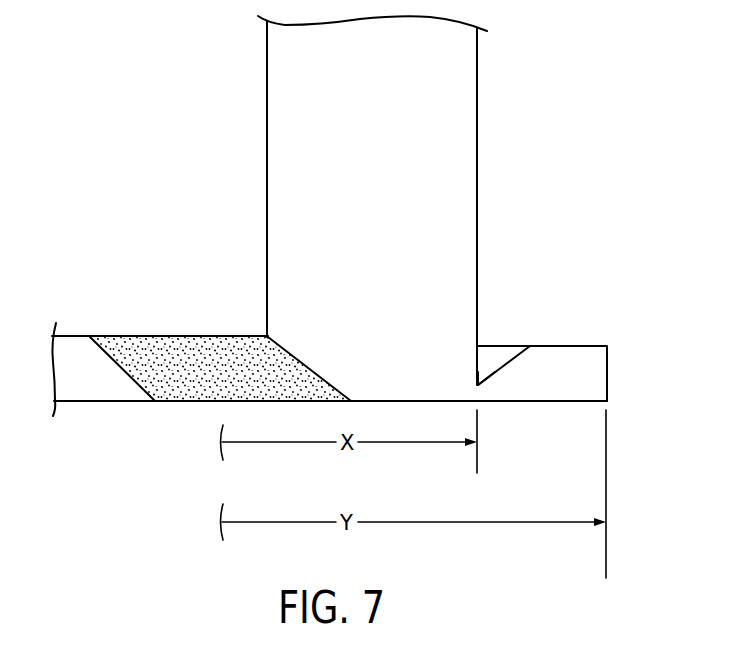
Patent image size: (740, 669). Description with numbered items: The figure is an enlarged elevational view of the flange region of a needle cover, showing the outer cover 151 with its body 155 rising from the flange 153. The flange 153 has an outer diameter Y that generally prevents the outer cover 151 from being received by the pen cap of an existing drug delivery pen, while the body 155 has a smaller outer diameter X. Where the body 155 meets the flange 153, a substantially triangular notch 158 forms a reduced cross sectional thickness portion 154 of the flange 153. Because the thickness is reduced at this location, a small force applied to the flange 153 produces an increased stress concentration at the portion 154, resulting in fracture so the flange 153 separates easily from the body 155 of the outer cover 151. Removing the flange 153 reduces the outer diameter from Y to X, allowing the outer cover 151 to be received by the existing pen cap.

The outer cover 151 is at (490, 137).
The flange 153 is at (607, 375).
The reduced cross sectional thickness portion 154 is at (486, 373).
The body 155 is at (478, 268).
The notch 158 is at (487, 373).